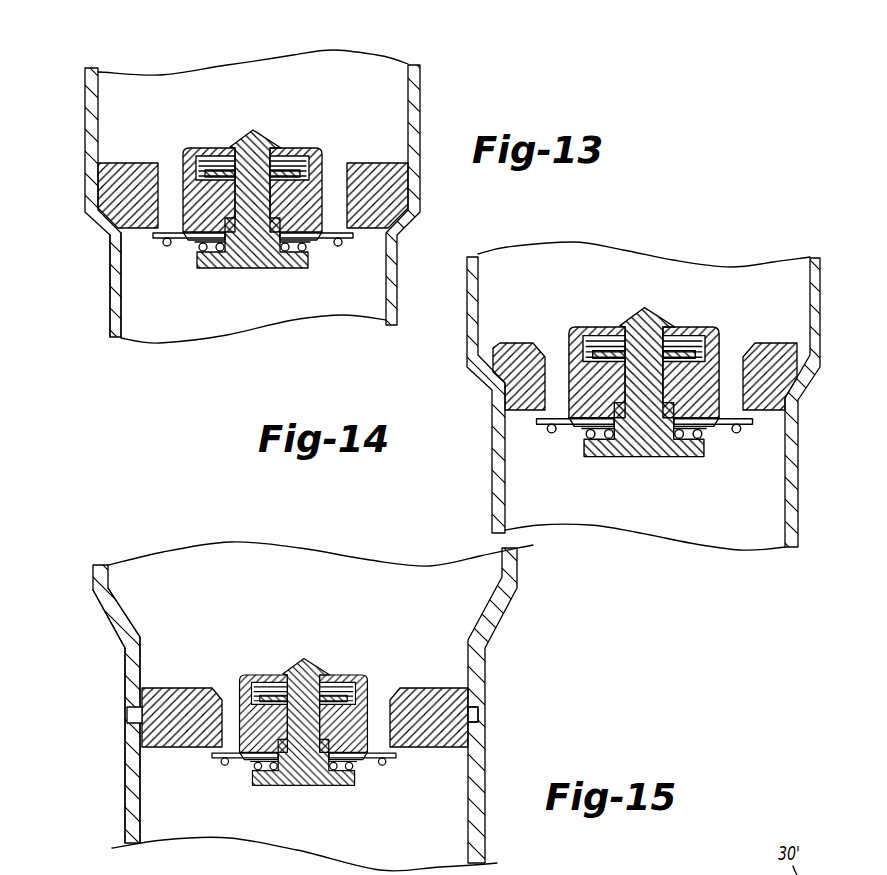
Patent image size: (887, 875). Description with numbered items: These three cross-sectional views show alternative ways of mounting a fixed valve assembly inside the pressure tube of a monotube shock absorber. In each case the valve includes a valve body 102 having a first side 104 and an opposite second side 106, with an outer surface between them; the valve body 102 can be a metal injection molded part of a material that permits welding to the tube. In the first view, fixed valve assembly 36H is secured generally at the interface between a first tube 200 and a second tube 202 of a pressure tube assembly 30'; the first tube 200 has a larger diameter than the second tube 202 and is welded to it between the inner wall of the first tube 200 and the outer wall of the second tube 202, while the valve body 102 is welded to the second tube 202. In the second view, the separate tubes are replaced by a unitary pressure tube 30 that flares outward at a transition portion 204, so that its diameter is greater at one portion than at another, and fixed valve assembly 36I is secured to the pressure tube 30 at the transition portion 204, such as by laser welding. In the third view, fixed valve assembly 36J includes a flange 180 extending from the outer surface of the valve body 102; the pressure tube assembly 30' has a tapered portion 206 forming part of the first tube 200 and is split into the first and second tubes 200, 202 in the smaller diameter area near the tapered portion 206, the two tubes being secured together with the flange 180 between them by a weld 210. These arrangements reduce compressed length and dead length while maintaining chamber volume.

In FIG. 14, the pressure tube 30 is at (803, 376).
In FIG. 13, the pressure tube assembly 30' is at (403, 168).
In FIG. 15, the pressure tube assembly 30' is at (302, 688).
In FIG. 13, the fixed valve assembly 36H is at (261, 130).
In FIG. 14, the fixed valve assembly 36I is at (655, 307).
In FIG. 15, the fixed valve assembly 36J is at (314, 658).
In FIG. 13, the valve body 102 is at (137, 178).
In FIG. 14, the valve body 102 is at (507, 352).
In FIG. 15, the valve body 102 is at (172, 708).
In FIG. 13, the first side 104 is at (147, 172).
In FIG. 14, the first side 104 is at (528, 347).
In FIG. 15, the first side 104 is at (189, 687).
In FIG. 13, the second side 106 is at (128, 230).
In FIG. 14, the second side 106 is at (513, 414).
In FIG. 15, the second side 106 is at (422, 750).
In FIG. 15, the flange 180 is at (472, 712).
In FIG. 13, the first tube 200 is at (85, 70).
In FIG. 15, the first tube 200 is at (92, 572).
In FIG. 13, the second tube 202 is at (110, 298).
In FIG. 15, the second tube 202 is at (125, 790).
In FIG. 14, the transition portion 204 is at (480, 373).
In FIG. 15, the tapered portion 206 is at (108, 626).
In FIG. 15, the weld 210 is at (480, 710).